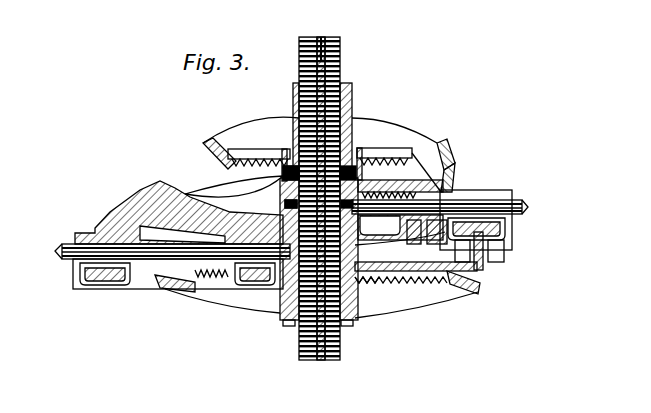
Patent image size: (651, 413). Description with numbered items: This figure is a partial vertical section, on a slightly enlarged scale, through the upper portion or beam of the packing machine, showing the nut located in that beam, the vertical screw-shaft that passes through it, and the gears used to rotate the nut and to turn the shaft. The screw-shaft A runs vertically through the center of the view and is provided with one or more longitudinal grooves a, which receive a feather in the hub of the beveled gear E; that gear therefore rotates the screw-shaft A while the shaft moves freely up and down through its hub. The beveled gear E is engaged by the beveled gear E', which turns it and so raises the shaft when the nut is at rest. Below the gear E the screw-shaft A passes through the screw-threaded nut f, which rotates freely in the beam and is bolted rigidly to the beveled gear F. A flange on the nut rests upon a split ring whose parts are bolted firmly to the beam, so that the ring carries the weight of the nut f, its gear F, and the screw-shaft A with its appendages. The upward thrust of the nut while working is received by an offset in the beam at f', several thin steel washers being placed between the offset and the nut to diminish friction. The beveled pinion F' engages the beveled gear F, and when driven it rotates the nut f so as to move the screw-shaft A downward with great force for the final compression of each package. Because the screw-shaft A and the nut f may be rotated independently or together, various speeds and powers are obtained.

The screw-shaft A is at (336, 74).
The longitudinal grooves a is at (321, 40).
The beveled gear E is at (251, 149).
The beveled gear E' is at (403, 155).
The clutch block e is at (283, 172).
The offset in the beam f' is at (179, 210).
The screw-threaded nut f is at (401, 221).
The beveled pinion F' is at (178, 286).
The beveled gear F is at (417, 290).